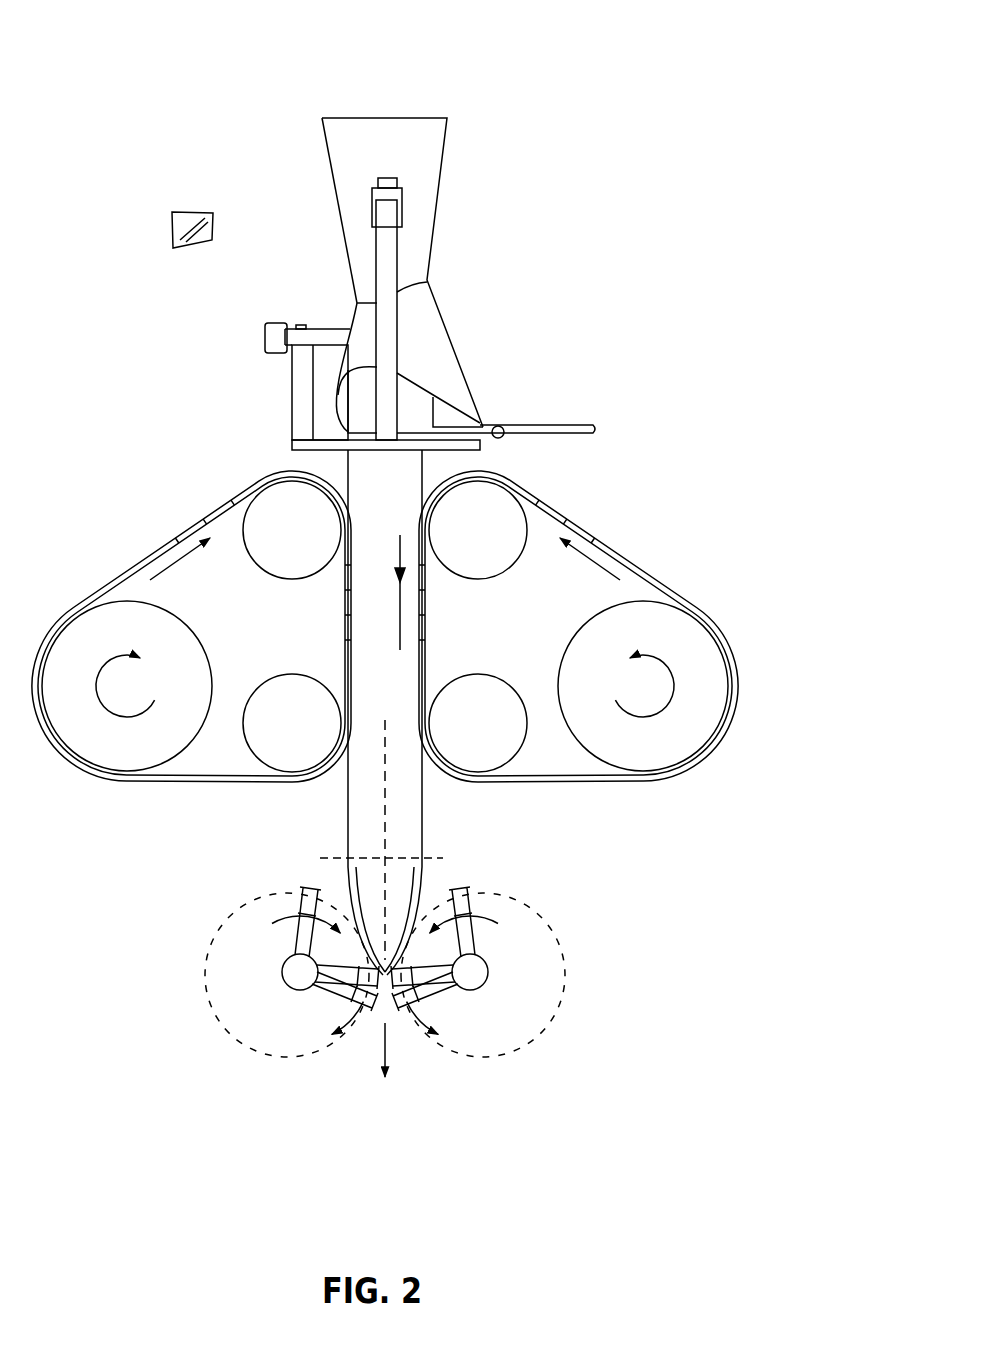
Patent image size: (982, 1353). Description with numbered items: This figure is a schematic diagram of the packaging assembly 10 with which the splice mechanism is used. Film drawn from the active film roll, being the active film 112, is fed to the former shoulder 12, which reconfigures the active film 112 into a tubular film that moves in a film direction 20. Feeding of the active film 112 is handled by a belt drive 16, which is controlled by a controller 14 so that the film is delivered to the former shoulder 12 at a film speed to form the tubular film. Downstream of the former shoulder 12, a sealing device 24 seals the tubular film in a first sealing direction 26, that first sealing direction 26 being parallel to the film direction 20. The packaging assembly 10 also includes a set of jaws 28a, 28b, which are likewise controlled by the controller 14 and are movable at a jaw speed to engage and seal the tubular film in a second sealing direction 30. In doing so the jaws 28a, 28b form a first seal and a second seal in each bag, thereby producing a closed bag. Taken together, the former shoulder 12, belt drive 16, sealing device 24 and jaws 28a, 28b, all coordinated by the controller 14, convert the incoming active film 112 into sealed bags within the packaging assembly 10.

The packaging assembly 10 is at (575, 110).
The former shoulder 12 is at (439, 187).
The controller 14 is at (172, 218).
The belt drive 16 is at (770, 655).
The film direction 20 is at (402, 612).
The sealing device 24 is at (360, 470).
The first sealing direction 26 is at (385, 823).
The jaw 28a is at (476, 976).
The jaw 28b is at (290, 980).
The second sealing direction 30 is at (445, 858).
The active film 112 is at (597, 426).